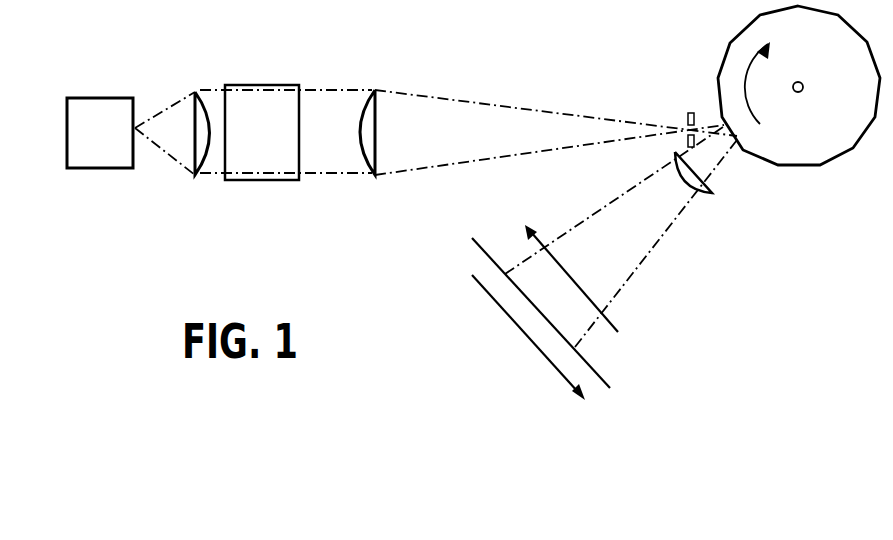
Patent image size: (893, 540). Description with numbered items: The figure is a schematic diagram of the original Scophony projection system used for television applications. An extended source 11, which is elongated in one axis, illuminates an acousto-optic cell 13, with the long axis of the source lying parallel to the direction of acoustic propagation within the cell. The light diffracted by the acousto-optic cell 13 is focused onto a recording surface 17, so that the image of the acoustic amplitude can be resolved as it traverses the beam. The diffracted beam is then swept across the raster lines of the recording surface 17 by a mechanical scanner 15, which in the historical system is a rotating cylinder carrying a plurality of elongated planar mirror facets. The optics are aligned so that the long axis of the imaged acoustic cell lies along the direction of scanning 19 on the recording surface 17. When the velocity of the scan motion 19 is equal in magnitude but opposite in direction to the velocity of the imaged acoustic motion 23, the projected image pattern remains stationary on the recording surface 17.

The extended source 11 is at (100, 100).
The acousto-optic cell 13 is at (300, 120).
The rotating polygon mirror 15 is at (730, 50).
The recording surface 17 is at (592, 365).
The direction of scanning 19 is at (580, 290).
The imaged acoustic motion 23 is at (518, 328).